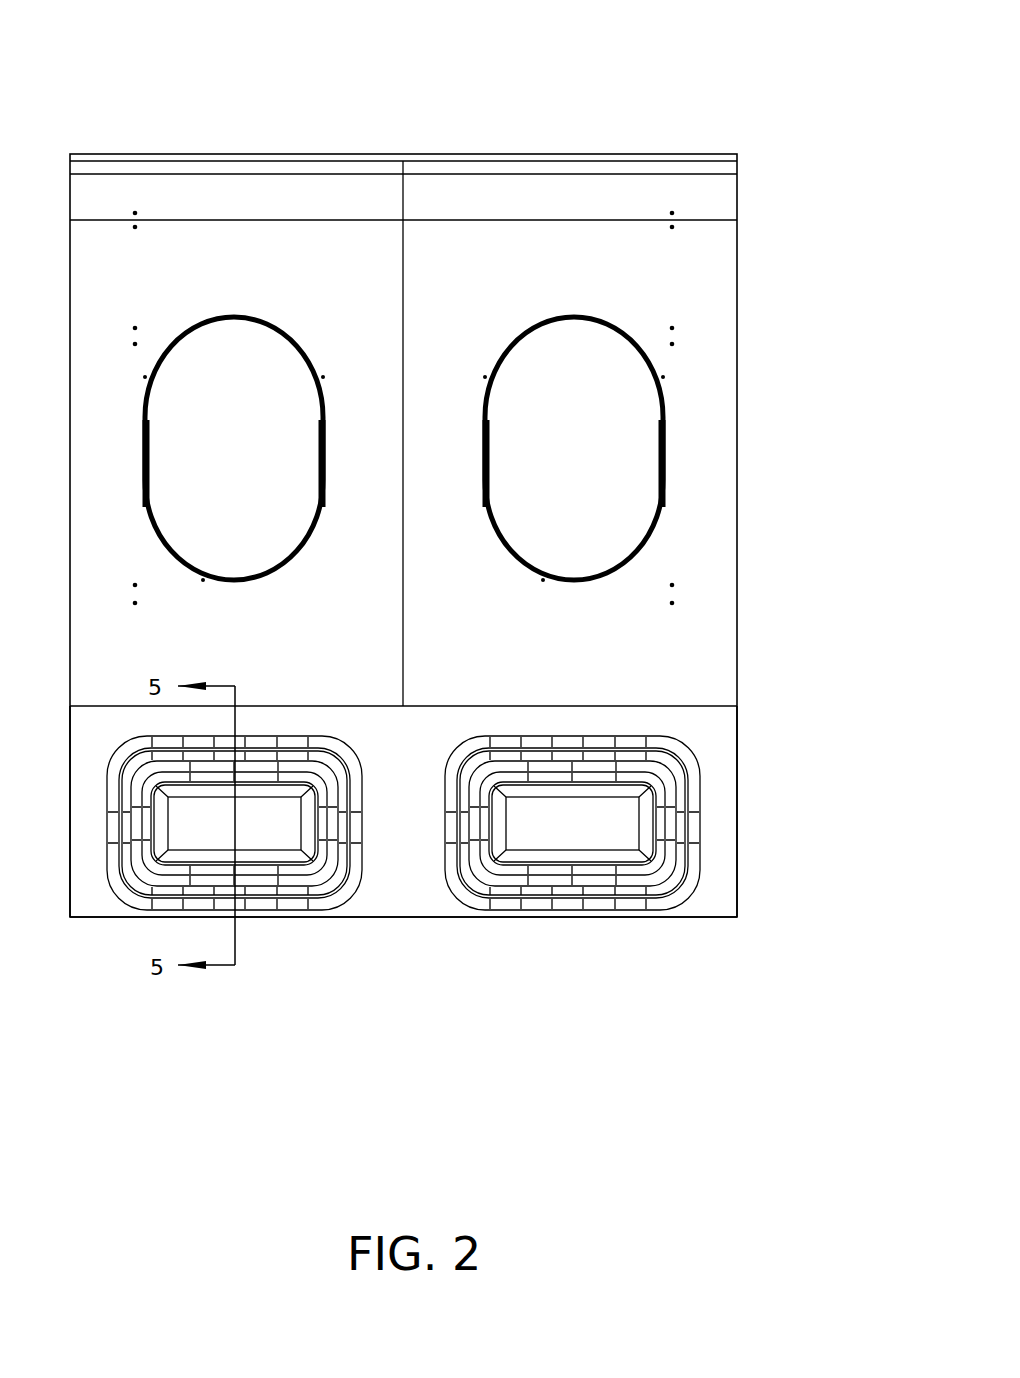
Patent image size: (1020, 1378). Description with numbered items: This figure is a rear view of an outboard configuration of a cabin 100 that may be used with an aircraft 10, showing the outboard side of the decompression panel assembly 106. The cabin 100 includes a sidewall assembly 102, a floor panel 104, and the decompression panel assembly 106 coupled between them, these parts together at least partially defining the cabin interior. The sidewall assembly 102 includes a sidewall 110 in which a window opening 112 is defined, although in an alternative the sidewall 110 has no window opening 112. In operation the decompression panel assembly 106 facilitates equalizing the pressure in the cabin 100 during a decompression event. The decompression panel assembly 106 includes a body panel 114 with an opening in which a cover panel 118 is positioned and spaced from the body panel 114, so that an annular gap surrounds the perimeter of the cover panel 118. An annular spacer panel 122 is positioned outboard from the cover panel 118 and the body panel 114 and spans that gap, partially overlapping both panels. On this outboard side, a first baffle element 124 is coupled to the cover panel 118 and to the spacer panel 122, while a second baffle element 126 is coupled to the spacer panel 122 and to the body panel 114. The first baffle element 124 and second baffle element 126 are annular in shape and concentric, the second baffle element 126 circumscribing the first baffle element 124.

The aircraft 10 is at (780, 108).
The cabin 100 is at (768, 203).
The sidewall assembly 102 is at (752, 503).
The floor panel 104 is at (720, 918).
The decompression panel assembly 106 is at (710, 713).
The sidewall 110 is at (707, 287).
The window opening 112 is at (622, 413).
The body panel 114 is at (715, 793).
The cover panel 118 is at (622, 827).
The annular spacer panel 122 is at (670, 852).
The first baffle element 124 is at (650, 873).
The second baffle element 126 is at (682, 752).